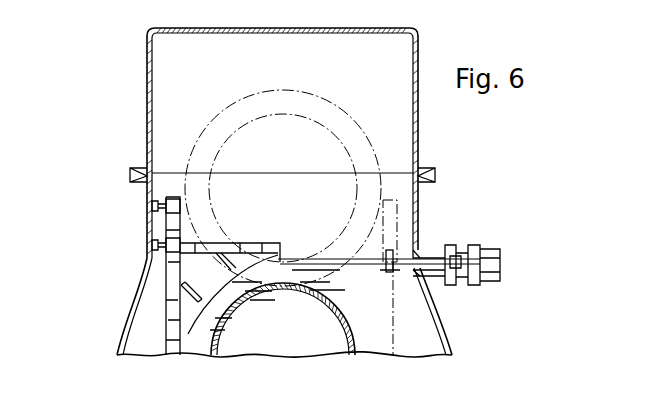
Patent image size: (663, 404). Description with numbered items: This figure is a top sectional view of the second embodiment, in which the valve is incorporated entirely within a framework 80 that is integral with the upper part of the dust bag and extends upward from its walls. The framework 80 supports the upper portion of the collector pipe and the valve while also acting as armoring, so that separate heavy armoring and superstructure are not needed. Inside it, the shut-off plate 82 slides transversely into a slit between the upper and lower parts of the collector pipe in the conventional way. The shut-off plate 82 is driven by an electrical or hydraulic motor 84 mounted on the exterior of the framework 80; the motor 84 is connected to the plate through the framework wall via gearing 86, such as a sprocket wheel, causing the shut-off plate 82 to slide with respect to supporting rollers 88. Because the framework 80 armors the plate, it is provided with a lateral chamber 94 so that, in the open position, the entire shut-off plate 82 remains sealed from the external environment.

The lateral chamber 94 is at (383, 30).
The framework 80 is at (447, 341).
The shut-off plate 82 is at (167, 329).
The motor 84 is at (490, 250).
The gearing 86 is at (393, 255).
The supporting rollers 88 is at (150, 207).